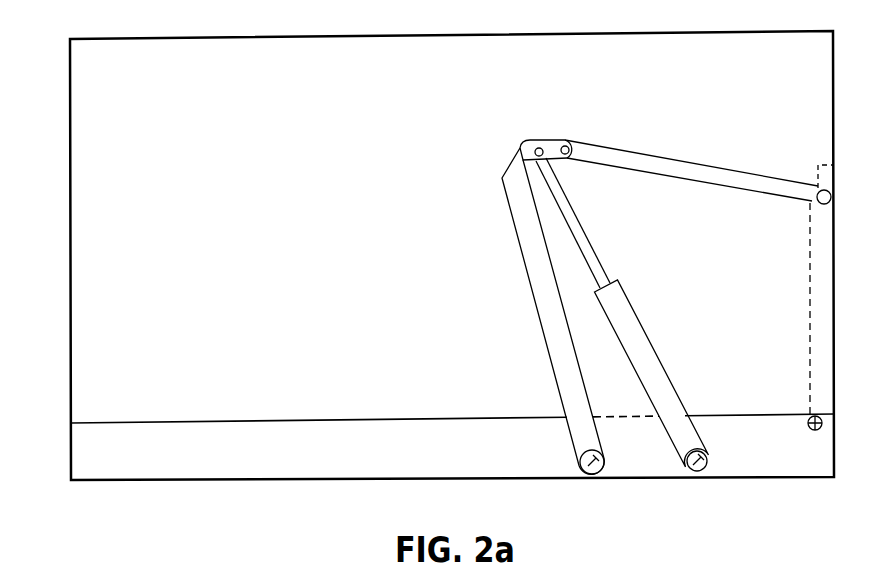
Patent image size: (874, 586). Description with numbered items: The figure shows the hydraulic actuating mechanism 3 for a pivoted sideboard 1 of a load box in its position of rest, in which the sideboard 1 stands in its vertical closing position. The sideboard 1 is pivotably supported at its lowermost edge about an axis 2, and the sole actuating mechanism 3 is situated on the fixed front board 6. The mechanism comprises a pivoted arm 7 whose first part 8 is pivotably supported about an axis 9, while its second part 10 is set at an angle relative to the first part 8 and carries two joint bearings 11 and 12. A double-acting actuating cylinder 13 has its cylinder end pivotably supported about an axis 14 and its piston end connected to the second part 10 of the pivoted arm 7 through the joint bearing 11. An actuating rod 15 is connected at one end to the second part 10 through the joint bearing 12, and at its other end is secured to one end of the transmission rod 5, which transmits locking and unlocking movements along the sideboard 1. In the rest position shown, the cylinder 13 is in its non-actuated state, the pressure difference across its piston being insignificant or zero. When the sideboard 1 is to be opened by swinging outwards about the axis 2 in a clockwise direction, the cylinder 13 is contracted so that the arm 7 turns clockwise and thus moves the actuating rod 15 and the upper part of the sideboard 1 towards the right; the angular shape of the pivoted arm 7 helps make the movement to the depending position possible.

The sideboard 1 is at (835, 274).
The axis 2 is at (823, 422).
The hydraulic actuating mechanism 3 is at (671, 209).
The transmission rod 5 is at (832, 192).
The fixed front board 6 is at (297, 240).
The pivoted arm 7 is at (484, 245).
The first part 8 is at (535, 307).
The axis 9 is at (587, 474).
The second part 10 is at (552, 139).
The joint bearing 11 is at (537, 147).
The joint bearing 12 is at (568, 158).
The double-acting actuating cylinder 13 is at (653, 322).
The axis 14 is at (700, 471).
The actuating rod 15 is at (668, 157).